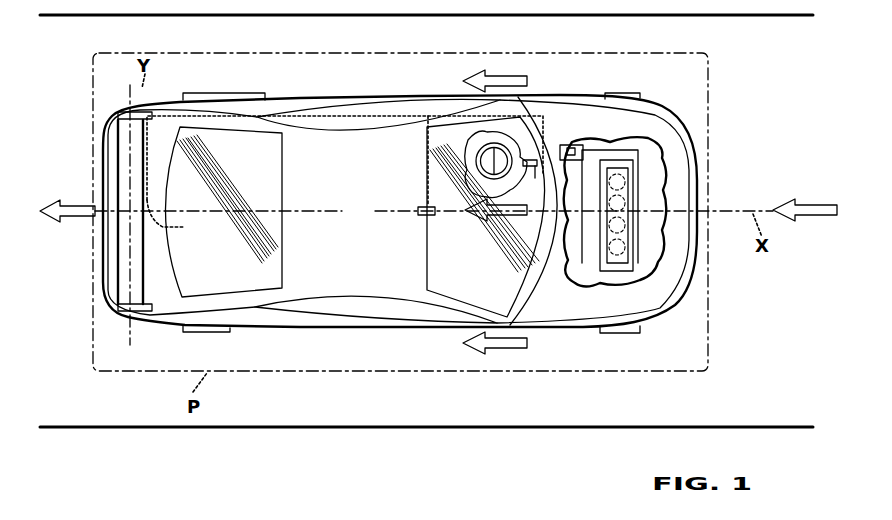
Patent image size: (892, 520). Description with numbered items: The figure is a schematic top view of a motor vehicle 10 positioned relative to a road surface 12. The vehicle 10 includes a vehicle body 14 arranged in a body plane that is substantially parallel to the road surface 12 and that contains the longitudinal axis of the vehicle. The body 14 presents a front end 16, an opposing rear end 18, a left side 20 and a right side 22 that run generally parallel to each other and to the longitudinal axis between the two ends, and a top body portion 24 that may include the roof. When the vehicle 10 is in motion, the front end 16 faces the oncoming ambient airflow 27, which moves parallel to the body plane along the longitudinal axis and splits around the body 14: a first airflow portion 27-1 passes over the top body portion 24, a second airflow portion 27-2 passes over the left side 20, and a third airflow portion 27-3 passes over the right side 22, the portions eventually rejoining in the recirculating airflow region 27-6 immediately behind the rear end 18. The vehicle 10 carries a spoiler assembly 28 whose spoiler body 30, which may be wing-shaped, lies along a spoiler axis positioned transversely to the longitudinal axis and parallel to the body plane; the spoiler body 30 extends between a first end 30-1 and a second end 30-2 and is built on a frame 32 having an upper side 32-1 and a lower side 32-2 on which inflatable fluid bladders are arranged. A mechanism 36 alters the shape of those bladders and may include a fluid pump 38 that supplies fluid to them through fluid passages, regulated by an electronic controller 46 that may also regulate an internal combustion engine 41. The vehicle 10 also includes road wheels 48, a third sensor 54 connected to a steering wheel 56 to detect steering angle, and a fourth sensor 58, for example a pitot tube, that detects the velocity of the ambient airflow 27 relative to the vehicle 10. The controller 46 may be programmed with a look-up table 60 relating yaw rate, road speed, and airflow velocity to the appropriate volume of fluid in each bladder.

The motor vehicle 10 is at (741, 342).
The road surface 12 is at (311, 417).
The vehicle body 14 is at (360, 155).
The front end 16 is at (697, 167).
The rear end 18 is at (103, 187).
The left side 20 is at (415, 102).
The right side 22 is at (403, 325).
The top body portion 24 is at (369, 219).
The ambient airflow 27 is at (810, 206).
The first airflow portion 27-1 is at (505, 222).
The second airflow portion 27-2 is at (503, 80).
The third airflow portion 27-3 is at (503, 350).
The recirculating airflow region 27-6 is at (77, 220).
The spoiler assembly 28 is at (147, 266).
The spoiler body 30 is at (143, 206).
The first end 30-1 is at (150, 120).
The second end 30-2 is at (125, 297).
The frame 32 is at (581, 255).
The upper side 32-1 is at (120, 111).
The lower side 32-2 is at (120, 313).
The mechanism 36 is at (345, 176).
The fluid pump 38 is at (673, 255).
The internal combustion engine 41 is at (650, 178).
The electronic controller 46 is at (570, 145).
The road wheels 48 is at (208, 95).
The third sensor 54 is at (535, 180).
The steering wheel 56 is at (470, 162).
The fourth sensor 58 is at (425, 216).
The look-up table 60 is at (580, 150).